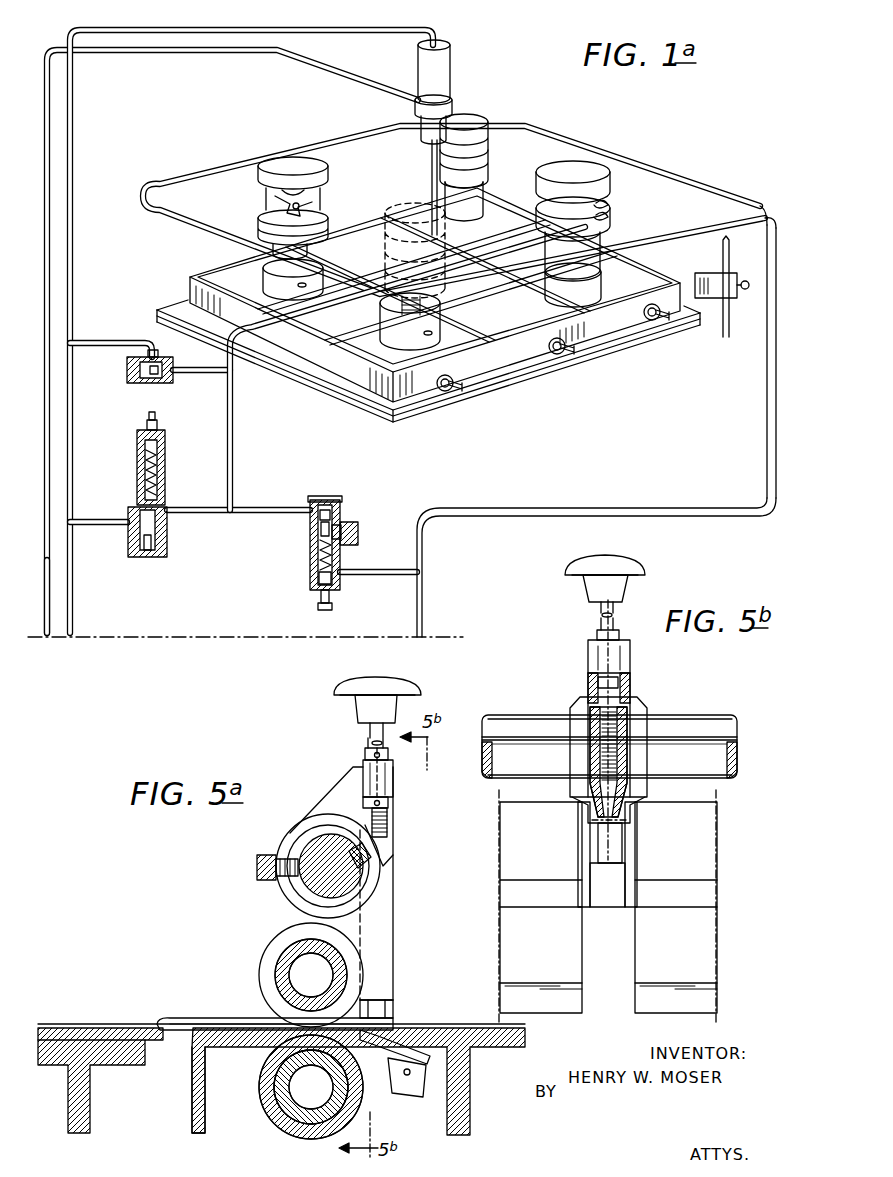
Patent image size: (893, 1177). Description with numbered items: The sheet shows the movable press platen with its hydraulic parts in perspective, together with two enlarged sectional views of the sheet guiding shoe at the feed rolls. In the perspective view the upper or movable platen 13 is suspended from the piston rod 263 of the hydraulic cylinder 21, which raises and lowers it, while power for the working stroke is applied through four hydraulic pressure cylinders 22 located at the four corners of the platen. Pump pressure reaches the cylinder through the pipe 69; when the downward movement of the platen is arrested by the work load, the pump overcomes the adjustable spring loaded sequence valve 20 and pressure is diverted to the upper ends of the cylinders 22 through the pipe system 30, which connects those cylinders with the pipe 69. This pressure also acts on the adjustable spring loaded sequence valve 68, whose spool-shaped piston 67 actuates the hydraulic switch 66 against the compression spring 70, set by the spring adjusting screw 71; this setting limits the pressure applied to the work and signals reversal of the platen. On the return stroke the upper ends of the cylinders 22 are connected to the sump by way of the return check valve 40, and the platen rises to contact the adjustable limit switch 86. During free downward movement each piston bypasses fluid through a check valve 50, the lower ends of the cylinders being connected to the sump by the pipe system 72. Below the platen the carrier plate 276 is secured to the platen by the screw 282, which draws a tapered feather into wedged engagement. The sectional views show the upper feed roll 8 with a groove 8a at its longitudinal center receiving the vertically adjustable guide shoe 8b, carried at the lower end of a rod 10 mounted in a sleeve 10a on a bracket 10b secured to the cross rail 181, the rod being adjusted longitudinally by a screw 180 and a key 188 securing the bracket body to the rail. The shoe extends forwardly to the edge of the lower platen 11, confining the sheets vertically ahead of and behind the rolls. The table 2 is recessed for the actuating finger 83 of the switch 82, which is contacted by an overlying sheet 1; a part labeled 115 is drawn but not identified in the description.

In FIG. 5A, the sheet 1 is at (108, 1024).
In FIG. 5A, the table 2 is at (487, 1050).
In FIG. 5A, the feed rolls 8 is at (272, 930).
In FIG. 5B, the feed rolls 8 is at (512, 856).
In FIG. 5A, the groove 8a is at (274, 962).
In FIG. 5B, the groove 8a is at (588, 838).
In FIG. 5A, the guide shoe 8b is at (200, 1017).
In FIG. 5B, the guide shoe 8b is at (607, 908).
In FIG. 5A, the rod 10 is at (380, 958).
In FIG. 5B, the rod 10 is at (612, 843).
In FIG. 5A, the sleeve 10a is at (394, 893).
In FIG. 5B, the sleeve 10a is at (630, 762).
In FIG. 5A, the bracket 10b is at (328, 799).
In FIG. 5B, the bracket 10b is at (630, 668).
In FIG. 5A, the lower platen 11 is at (108, 1062).
In FIG. 1A, the movable platen 13 is at (425, 422).
In FIG. 1A, the sequence valve 20 is at (136, 462).
In FIG. 1A, the hydraulic cylinder 21 is at (446, 46).
In FIG. 1A, the hydraulic pressure cylinders 22 is at (282, 158).
In FIG. 1A, the pipe system 30 is at (227, 408).
In FIG. 1A, the return check valve 40 is at (130, 378).
In FIG. 1A, the check valve 50 is at (298, 199).
In FIG. 1A, the hydraulic switch 66 is at (352, 522).
In FIG. 1A, the spool-shaped piston 67 is at (314, 538).
In FIG. 1A, the sequence valve 68 is at (323, 500).
In FIG. 1A, the pipe 69 is at (58, 596).
In FIG. 1A, the compression spring 70 is at (314, 557).
In FIG. 1A, the spring adjusting screw 71 is at (318, 606).
In FIG. 1A, the pipe system 72 is at (765, 408).
In FIG. 5A, the switch 82 is at (406, 1099).
In FIG. 5A, the actuating finger 83 is at (396, 1040).
In FIG. 1A, the adjustable limit switch 86 is at (706, 280).
In FIG. 5A, the plate leg 115 is at (191, 1114).
In FIG. 5A, the screw 180 is at (389, 815).
In FIG. 5B, the screw 180 is at (620, 690).
In FIG. 5A, the cross rail 181 is at (311, 846).
In FIG. 5B, the cross rail 181 is at (517, 715).
In FIG. 5A, the key 188 is at (370, 845).
In FIG. 5B, the key 188 is at (728, 726).
In FIG. 1A, the piston rod 263 is at (440, 170).
In FIG. 1A, the carrier plate 276 is at (333, 389).
In FIG. 1A, the screw 282 is at (458, 388).